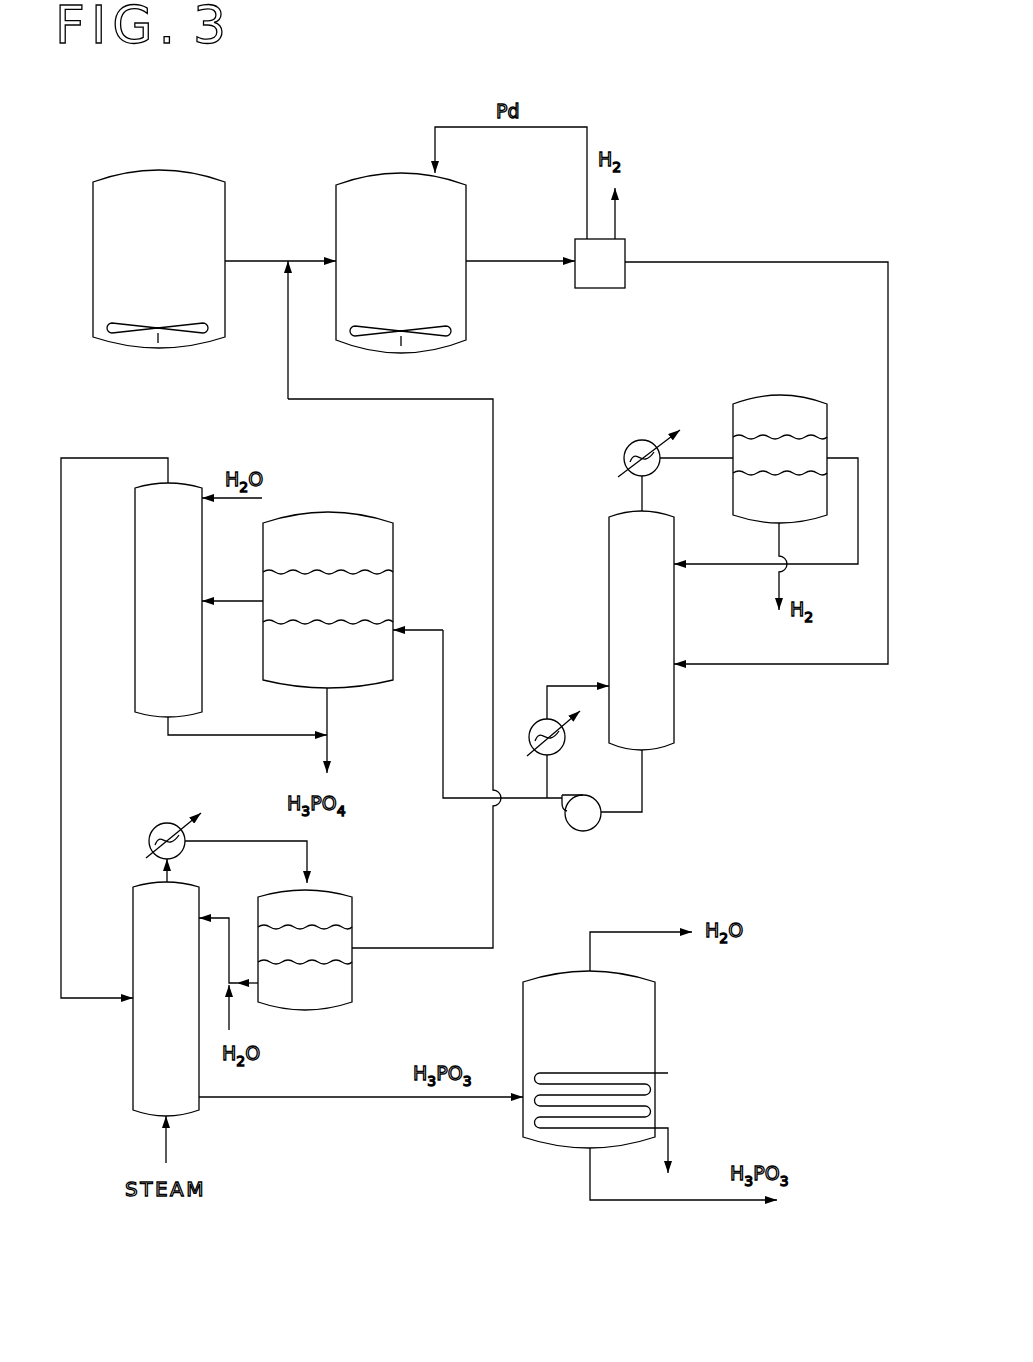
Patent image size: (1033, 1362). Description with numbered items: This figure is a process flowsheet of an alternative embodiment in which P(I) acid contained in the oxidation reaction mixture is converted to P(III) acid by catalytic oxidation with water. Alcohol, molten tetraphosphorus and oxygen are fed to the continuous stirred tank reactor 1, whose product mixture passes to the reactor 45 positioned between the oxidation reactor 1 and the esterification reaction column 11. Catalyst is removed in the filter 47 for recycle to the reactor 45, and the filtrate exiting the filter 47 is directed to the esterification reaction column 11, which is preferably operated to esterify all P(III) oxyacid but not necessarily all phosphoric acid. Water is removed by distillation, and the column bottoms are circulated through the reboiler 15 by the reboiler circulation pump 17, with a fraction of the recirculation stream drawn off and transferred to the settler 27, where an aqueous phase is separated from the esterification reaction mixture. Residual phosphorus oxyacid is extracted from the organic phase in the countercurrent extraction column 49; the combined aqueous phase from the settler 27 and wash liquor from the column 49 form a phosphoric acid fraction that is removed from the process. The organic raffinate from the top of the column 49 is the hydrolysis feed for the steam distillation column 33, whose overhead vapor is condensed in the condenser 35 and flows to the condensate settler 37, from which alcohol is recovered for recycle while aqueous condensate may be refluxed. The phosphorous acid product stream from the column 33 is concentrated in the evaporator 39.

The continuous stirred tank reactor 1 is at (93, 231).
The reactor 45 is at (347, 182).
The filter 47 is at (575, 248).
The esterification reaction column 11 is at (607, 563).
The reboiler 15 is at (541, 720).
The reboiler circulation pump 17 is at (590, 830).
The countercurrent extraction column 49 is at (135, 603).
The settler 27 is at (393, 592).
The condenser 35 is at (150, 833).
The steam distillation column 33 is at (132, 1086).
The condensate settler 37 is at (353, 997).
The evaporator 39 is at (655, 1033).